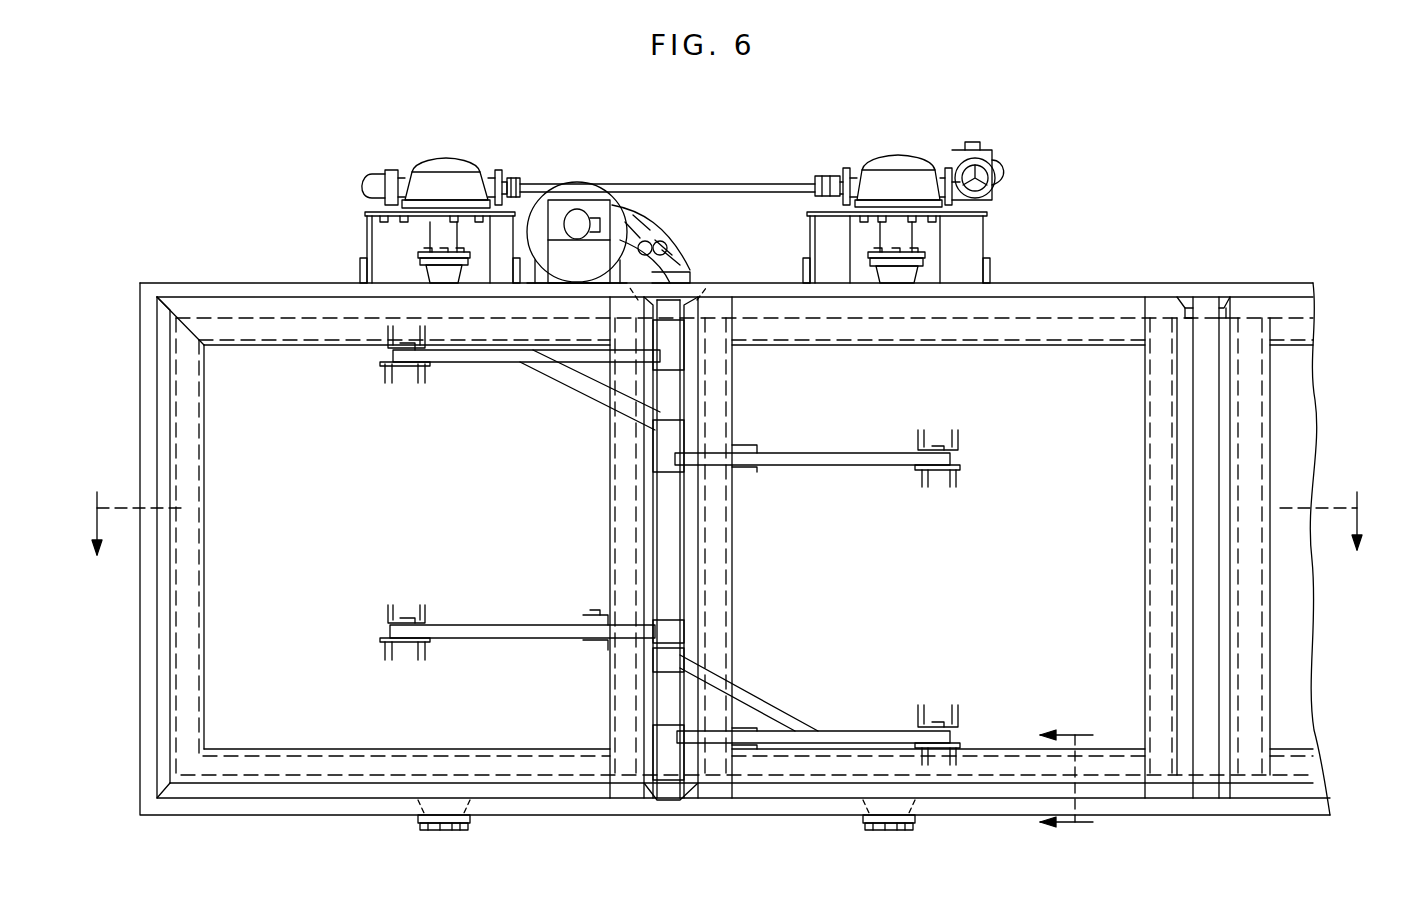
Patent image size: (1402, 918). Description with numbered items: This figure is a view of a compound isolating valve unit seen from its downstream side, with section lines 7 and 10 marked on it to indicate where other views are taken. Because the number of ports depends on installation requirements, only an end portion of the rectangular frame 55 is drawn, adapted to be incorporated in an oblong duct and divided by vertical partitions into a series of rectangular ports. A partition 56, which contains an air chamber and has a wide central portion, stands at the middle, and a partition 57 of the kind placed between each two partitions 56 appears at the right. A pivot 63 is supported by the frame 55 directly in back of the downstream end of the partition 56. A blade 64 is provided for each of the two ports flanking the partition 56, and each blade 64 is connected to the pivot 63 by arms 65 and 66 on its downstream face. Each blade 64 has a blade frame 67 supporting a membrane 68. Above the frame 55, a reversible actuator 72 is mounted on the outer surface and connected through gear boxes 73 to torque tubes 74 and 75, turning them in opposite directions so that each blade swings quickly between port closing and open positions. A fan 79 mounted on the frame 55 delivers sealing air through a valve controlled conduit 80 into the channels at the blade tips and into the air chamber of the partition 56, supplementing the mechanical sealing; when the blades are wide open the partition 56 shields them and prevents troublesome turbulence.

The frame 55 is at (1120, 283).
The partition 56 is at (719, 544).
The partition 57 is at (1300, 415).
The pivot 63 is at (704, 547).
The blade 64 is at (442, 543).
The arm 65 is at (848, 457).
The arm 66 is at (497, 352).
The blade frame 67 is at (1150, 662).
The membrane 68 is at (205, 410).
The reversible actuator 72 is at (998, 165).
The gear box 73 is at (458, 168).
The torque tube 74 is at (900, 242).
The torque tube 75 is at (432, 238).
The fan 79 is at (598, 180).
The valve controlled conduit 80 is at (678, 258).
The section line 7- 7 is at (726, 508).
The section line 10- 10 is at (1078, 779).